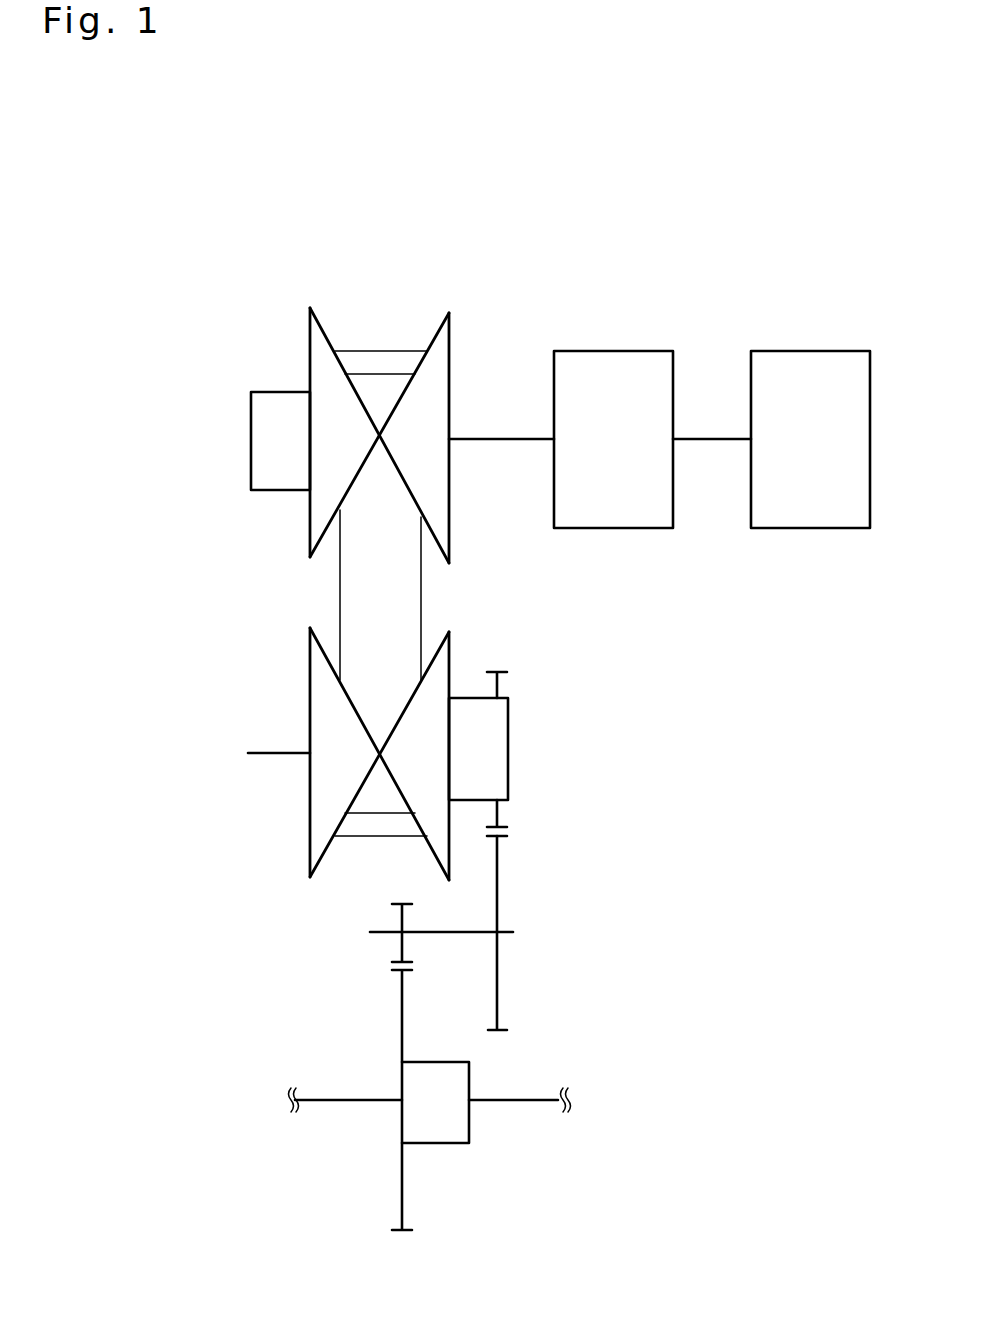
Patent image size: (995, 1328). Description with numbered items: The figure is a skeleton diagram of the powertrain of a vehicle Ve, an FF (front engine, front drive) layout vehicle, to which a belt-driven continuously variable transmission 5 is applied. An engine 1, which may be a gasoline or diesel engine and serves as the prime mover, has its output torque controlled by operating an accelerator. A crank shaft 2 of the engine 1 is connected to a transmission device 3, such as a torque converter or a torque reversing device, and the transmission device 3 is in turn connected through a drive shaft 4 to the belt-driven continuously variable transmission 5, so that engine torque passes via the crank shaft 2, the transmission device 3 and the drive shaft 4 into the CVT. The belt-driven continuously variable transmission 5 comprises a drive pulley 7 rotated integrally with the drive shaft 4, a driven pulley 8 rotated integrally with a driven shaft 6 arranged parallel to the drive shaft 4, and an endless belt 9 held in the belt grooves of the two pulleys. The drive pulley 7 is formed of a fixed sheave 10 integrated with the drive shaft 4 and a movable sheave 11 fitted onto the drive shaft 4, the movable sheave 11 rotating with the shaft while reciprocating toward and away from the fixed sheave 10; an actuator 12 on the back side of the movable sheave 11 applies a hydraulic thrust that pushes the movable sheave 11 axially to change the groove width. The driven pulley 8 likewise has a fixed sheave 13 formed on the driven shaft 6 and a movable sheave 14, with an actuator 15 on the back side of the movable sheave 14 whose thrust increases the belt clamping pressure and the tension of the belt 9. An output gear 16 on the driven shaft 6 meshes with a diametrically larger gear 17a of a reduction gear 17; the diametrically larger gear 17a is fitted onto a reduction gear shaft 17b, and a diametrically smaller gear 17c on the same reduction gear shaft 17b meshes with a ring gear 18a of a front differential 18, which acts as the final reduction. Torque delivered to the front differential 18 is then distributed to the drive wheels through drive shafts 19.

The vehicle Ve is at (784, 202).
The engine 1 is at (828, 351).
The crank shaft 2 is at (712, 440).
The transmission device 3 is at (623, 351).
The drive shaft 4 is at (501, 440).
The belt-driven continuously variable transmission 5 is at (466, 279).
The driven shaft 6 is at (265, 758).
The drive pulley 7 is at (335, 296).
The driven pulley 8 is at (291, 628).
The endless belt 9 is at (421, 584).
The fixed sheave 10 is at (452, 348).
The movable sheave 11 is at (310, 348).
The actuator 12 is at (251, 450).
The fixed sheave 13 is at (310, 677).
The movable sheave 14 is at (450, 648).
The actuator 15 is at (508, 745).
The output gear 16 is at (507, 829).
The reduction gear 17 is at (557, 937).
The diametrically larger gear 17a is at (507, 840).
The reduction gear shaft 17b is at (452, 935).
The diametrically smaller gear 17c is at (398, 962).
The front differential 18 is at (440, 1145).
The ring gear 18a is at (398, 972).
The drive shafts 19 is at (330, 1102).